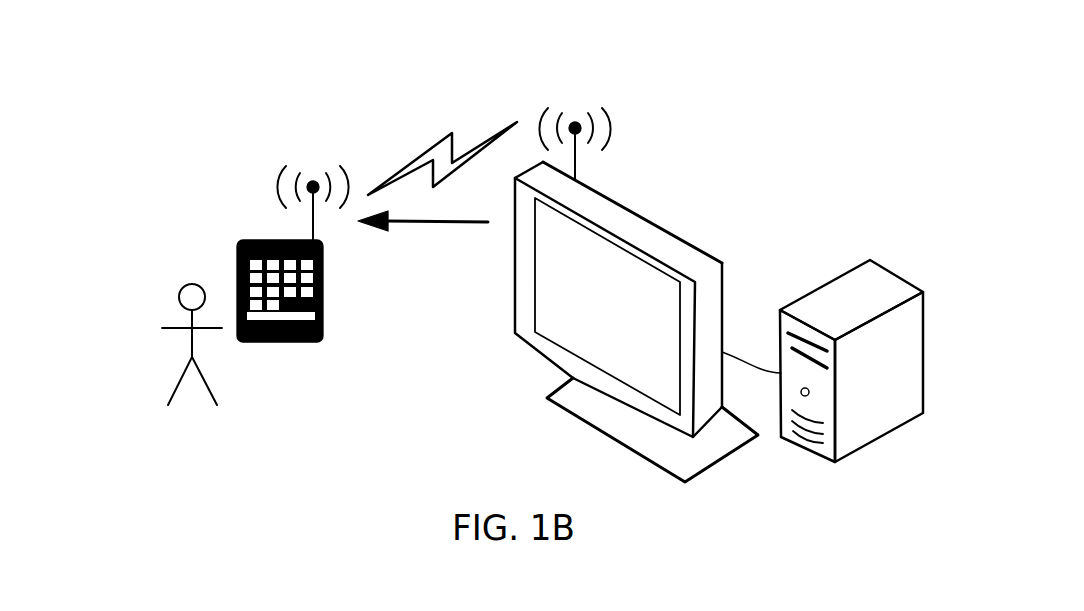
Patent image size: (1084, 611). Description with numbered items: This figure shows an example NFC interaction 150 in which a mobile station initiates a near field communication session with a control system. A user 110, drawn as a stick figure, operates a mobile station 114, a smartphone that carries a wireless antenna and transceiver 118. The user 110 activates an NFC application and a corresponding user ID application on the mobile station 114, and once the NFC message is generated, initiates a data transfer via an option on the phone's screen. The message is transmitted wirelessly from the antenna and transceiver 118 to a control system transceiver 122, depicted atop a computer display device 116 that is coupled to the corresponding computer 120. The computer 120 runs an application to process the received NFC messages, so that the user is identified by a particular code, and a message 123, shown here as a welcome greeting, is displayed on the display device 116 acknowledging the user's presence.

The NFC interaction 150 is at (118, 81).
The user 110 is at (192, 367).
The mobile station 114 is at (280, 309).
The wireless antenna and transceiver 118 is at (321, 180).
The computer display device 116 is at (648, 322).
The control system transceiver 122 is at (574, 128).
The message 123 is at (590, 240).
The computer 120 is at (851, 382).